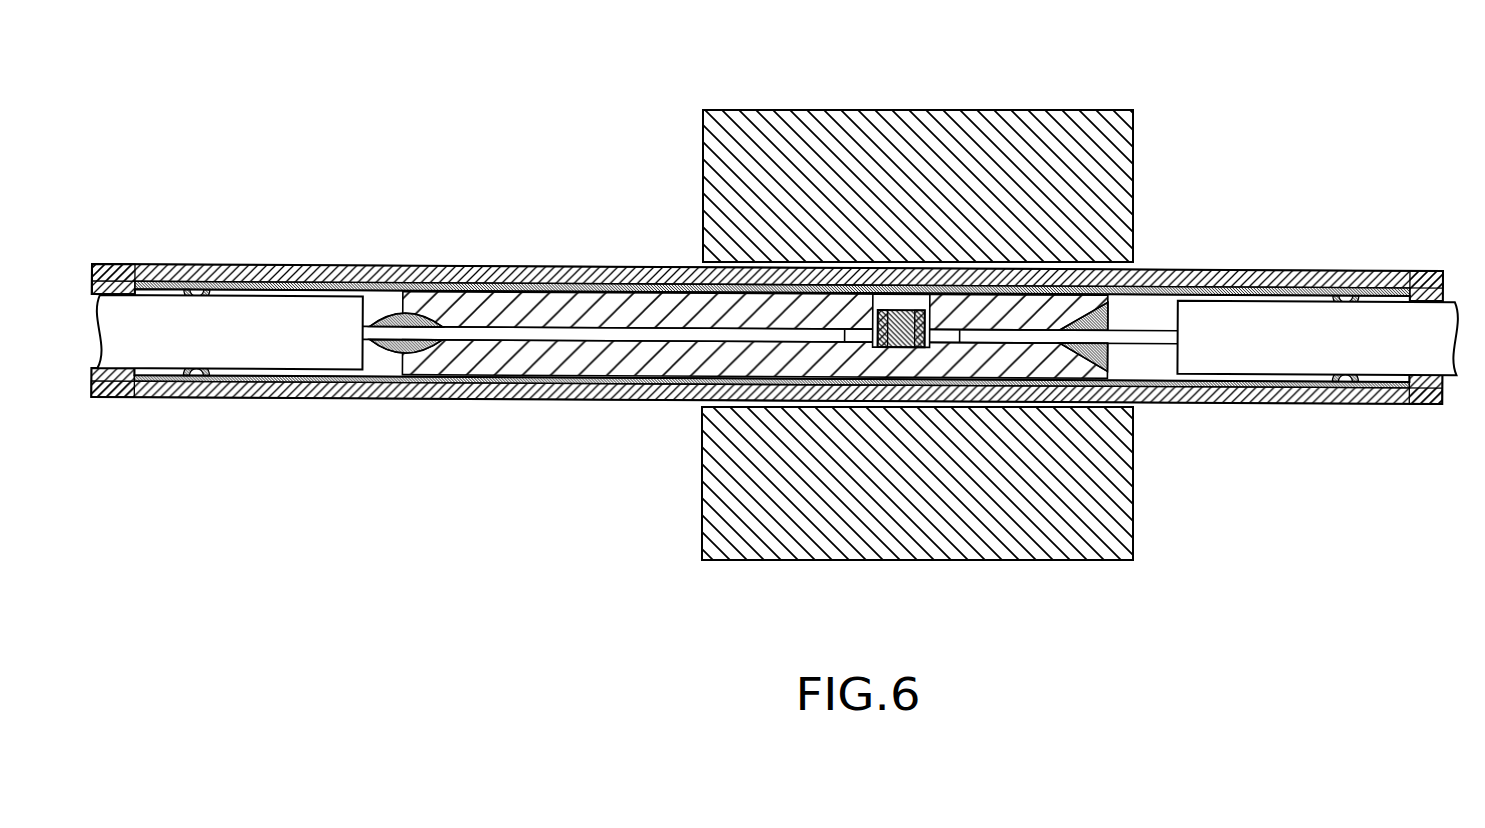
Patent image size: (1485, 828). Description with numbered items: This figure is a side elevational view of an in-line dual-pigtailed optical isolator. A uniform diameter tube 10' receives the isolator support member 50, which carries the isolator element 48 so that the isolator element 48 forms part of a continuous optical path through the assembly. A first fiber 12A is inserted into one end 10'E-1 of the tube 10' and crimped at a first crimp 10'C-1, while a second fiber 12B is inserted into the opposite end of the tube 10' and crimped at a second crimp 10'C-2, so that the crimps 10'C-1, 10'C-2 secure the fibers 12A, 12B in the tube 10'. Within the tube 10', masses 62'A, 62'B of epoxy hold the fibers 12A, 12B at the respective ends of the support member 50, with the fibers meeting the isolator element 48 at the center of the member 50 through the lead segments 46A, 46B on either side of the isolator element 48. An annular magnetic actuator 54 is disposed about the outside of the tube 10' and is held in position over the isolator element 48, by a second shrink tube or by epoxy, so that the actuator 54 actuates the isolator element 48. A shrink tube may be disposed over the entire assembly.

The uniform diameter tube 10' is at (767, 270).
The end of the tube 10'E-1 is at (161, 222).
The crimp 10'C-1 is at (270, 276).
The crimp 10'C-2 is at (1296, 286).
The fiber 12A is at (140, 349).
The fiber 12B is at (1255, 350).
The first lead segment 46A is at (861, 333).
The second lead segment 46B is at (940, 333).
The isolator element 48 is at (902, 303).
The isolator support member 50 is at (586, 352).
The actuator 54 is at (748, 109).
The mass of epoxy 62'A is at (406, 420).
The mass of epoxy 62'B is at (1147, 399).